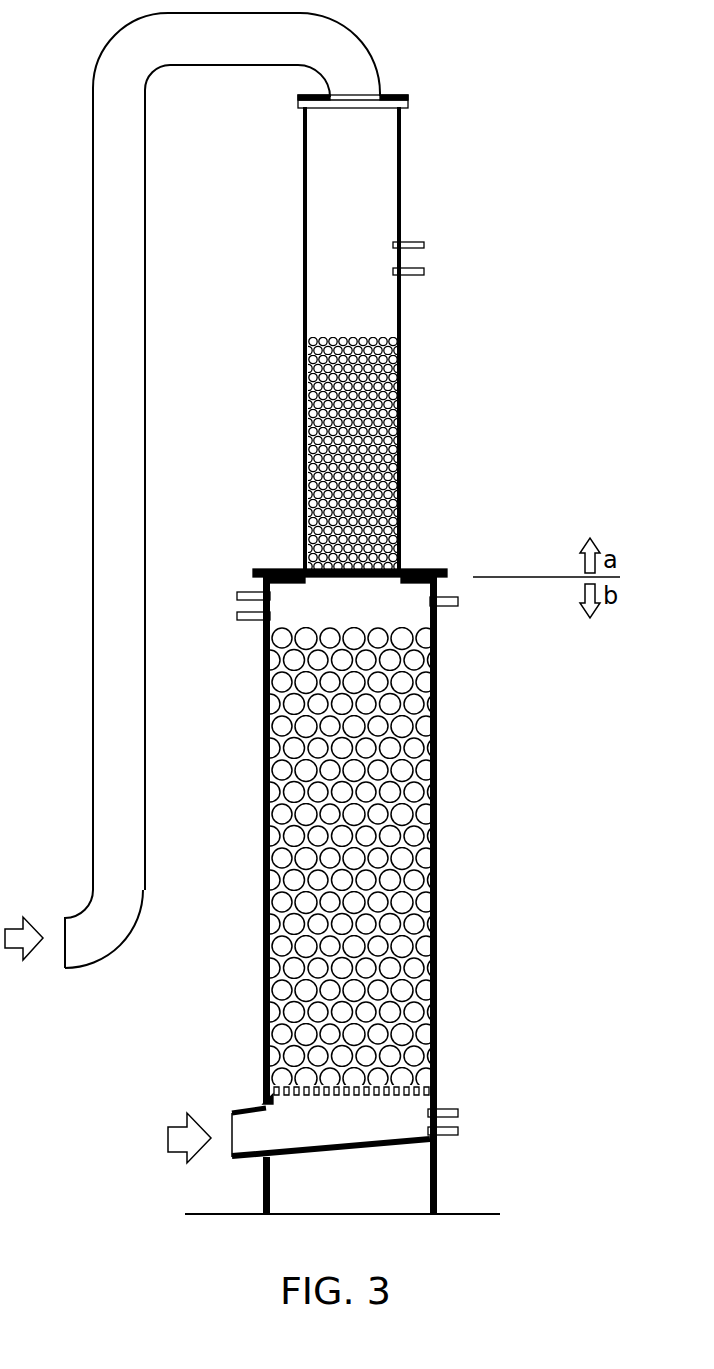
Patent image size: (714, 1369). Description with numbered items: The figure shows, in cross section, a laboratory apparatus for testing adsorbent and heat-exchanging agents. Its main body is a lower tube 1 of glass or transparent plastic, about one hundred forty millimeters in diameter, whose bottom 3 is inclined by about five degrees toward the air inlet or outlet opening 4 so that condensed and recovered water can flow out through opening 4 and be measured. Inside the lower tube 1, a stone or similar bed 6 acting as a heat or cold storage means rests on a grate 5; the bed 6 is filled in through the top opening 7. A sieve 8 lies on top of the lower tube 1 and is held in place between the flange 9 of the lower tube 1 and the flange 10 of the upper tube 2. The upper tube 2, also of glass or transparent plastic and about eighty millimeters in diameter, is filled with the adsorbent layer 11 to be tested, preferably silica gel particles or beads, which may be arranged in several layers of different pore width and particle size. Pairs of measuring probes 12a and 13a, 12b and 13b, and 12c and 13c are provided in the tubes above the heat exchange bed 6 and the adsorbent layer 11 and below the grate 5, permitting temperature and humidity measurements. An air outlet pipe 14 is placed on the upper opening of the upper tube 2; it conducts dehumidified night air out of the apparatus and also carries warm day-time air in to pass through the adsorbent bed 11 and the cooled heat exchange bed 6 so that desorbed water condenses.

The lower tube 1 is at (438, 835).
The upper tube 2 is at (401, 373).
The bottom 3 is at (343, 1148).
The air inlet or outlet opening 4 is at (250, 1125).
The grate 5 is at (390, 1095).
The stone bed 6 is at (405, 750).
The top opening 7 is at (397, 566).
The sieve 8 is at (333, 578).
The flange 9 is at (452, 579).
The flange 10 is at (447, 571).
The adsorbent layer 11 is at (385, 453).
The measuring probe 12a is at (247, 592).
The measuring probe 12b is at (413, 243).
The measuring probe 12c is at (455, 1110).
The measuring probe 13a is at (248, 619).
The measuring probe 13b is at (418, 276).
The measuring probe 13c is at (456, 1134).
The air outlet pipe 14 is at (125, 52).